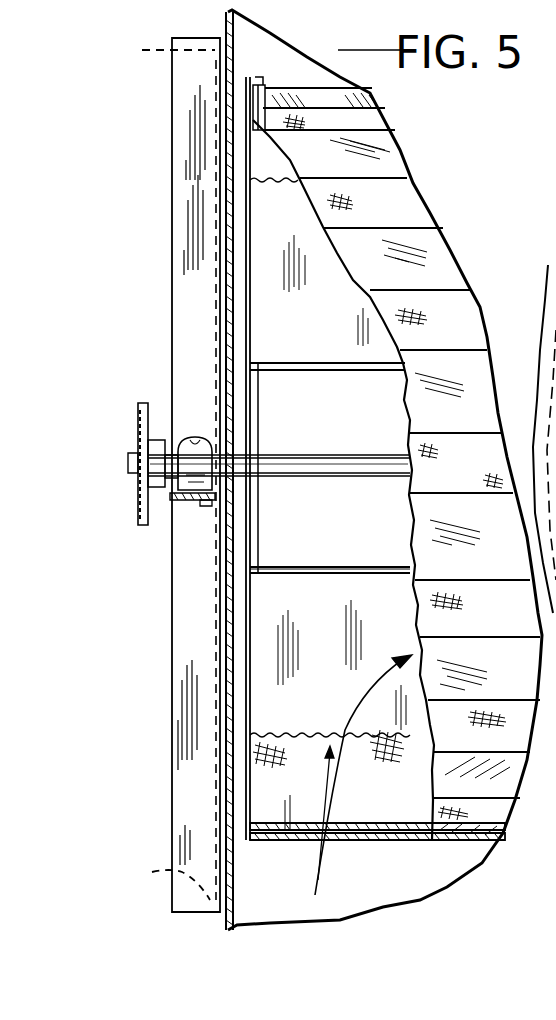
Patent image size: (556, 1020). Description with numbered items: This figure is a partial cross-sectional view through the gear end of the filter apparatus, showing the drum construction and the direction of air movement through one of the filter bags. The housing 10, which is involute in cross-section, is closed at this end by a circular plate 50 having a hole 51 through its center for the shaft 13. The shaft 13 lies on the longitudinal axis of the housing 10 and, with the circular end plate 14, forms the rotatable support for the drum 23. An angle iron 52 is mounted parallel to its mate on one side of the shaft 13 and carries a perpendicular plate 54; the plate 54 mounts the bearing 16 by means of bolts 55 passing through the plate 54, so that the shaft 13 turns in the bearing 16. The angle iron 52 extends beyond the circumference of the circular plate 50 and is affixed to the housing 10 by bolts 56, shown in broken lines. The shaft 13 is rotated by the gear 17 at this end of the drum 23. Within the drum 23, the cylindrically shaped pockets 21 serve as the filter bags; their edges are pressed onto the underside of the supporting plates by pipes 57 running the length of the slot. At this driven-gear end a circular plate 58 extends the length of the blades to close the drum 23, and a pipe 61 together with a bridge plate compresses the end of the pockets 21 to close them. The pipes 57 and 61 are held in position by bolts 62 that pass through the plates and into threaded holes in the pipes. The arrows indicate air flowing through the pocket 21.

The housing 10 is at (228, 915).
The shaft 13 is at (327, 455).
The circular end plate 14 is at (262, 512).
The bearing 16 is at (192, 436).
The gear 17 is at (138, 502).
The pocket 21 is at (256, 184).
The drum 23 is at (302, 863).
The circular plate 50 is at (226, 258).
The hole 51 is at (250, 424).
The angle iron 52 is at (172, 130).
The perpendicular plate 54 is at (180, 505).
The bolt 55 is at (203, 506).
The bolt 56 is at (164, 469).
The pipe 57 is at (375, 824).
The circular plate 58 is at (260, 325).
The pipe 61 is at (258, 822).
The bolt 62 is at (255, 840).